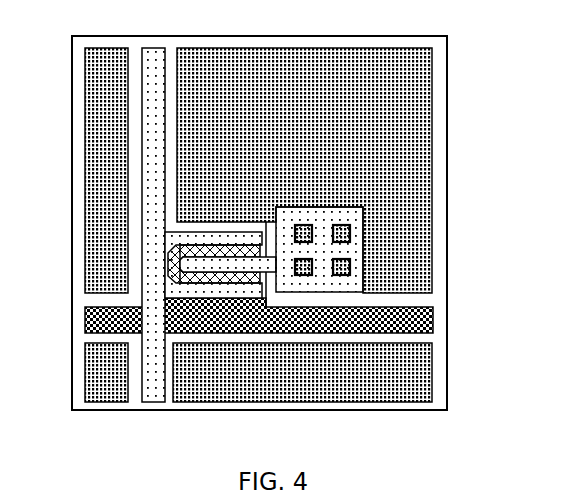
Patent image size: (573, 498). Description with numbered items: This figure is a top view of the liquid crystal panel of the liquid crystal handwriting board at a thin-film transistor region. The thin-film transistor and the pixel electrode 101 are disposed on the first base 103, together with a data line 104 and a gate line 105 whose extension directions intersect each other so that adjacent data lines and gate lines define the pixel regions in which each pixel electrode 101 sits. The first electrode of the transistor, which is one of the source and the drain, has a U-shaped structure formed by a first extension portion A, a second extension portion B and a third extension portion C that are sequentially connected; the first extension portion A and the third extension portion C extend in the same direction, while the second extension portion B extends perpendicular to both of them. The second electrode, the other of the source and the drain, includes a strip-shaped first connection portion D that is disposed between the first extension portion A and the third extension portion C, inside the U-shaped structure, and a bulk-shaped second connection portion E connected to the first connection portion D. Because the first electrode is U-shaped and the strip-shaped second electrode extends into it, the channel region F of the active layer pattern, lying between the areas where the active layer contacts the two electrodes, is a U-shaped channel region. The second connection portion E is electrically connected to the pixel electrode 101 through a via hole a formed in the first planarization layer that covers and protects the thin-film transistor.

The pixel electrode 101 is at (407, 221).
The first base 103 is at (438, 388).
The data line 104 is at (155, 63).
The gate line 105 is at (402, 318).
The first extension portion A is at (213, 244).
The second extension portion B is at (162, 266).
The third extension portion C is at (161, 278).
The first connection portion D is at (262, 268).
The second connection portion E is at (375, 228).
The channel region F is at (153, 238).
The via hole a is at (387, 250).